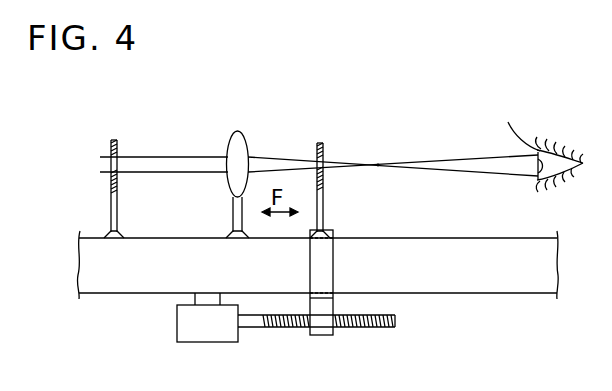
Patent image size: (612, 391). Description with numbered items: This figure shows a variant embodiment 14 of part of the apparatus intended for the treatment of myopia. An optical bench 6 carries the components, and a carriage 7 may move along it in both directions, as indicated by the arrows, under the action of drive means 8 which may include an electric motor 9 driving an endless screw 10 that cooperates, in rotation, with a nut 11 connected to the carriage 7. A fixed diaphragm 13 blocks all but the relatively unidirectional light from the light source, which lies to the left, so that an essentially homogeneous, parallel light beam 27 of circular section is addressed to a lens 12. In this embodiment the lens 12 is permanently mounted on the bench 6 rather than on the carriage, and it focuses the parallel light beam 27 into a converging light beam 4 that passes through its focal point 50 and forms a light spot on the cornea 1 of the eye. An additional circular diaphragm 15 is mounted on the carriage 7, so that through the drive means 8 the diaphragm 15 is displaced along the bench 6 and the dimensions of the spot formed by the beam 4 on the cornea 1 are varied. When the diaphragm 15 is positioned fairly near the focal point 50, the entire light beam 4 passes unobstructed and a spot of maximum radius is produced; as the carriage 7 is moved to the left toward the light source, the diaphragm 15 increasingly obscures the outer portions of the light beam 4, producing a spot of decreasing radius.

The cornea 1 is at (541, 142).
The light beam 4 is at (271, 158).
The optical bench 6 is at (516, 285).
The carriage 7 is at (328, 252).
The drive means 8 is at (293, 335).
The electric motor 9 is at (217, 332).
The endless screw 10 is at (367, 329).
The nut 11 is at (327, 329).
The lens 12 is at (232, 131).
The fixed diaphragm 13 is at (104, 128).
The variant embodiment 14 is at (382, 158).
The circular diaphragm 15 is at (320, 143).
The parallel light beam 27 is at (176, 155).
The focal point 50 is at (376, 167).